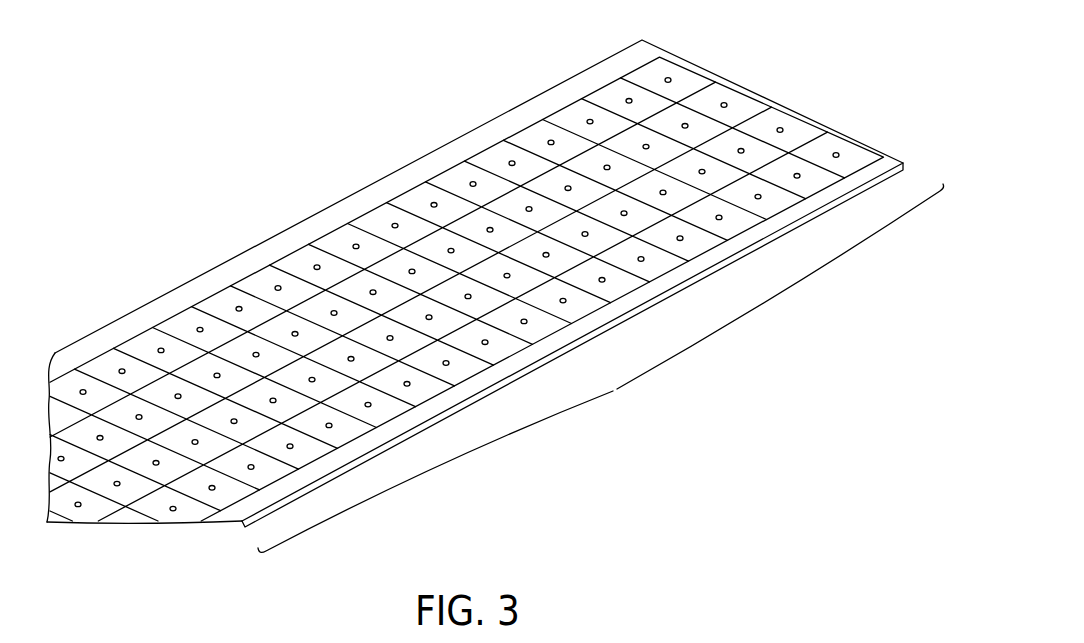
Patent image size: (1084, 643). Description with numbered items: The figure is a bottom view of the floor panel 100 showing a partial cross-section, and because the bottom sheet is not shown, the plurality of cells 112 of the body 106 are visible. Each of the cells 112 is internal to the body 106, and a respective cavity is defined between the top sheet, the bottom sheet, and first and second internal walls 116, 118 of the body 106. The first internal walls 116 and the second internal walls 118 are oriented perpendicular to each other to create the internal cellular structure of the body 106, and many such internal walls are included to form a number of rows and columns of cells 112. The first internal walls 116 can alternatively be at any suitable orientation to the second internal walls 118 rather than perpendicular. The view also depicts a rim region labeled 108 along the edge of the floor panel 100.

The floor panel 100 is at (226, 179).
The body 106 is at (750, 92).
The frame rim 108 is at (308, 228).
The plurality of cells 112 is at (601, 368).
The first internal walls 116 is at (362, 421).
The second internal walls 118 is at (309, 421).